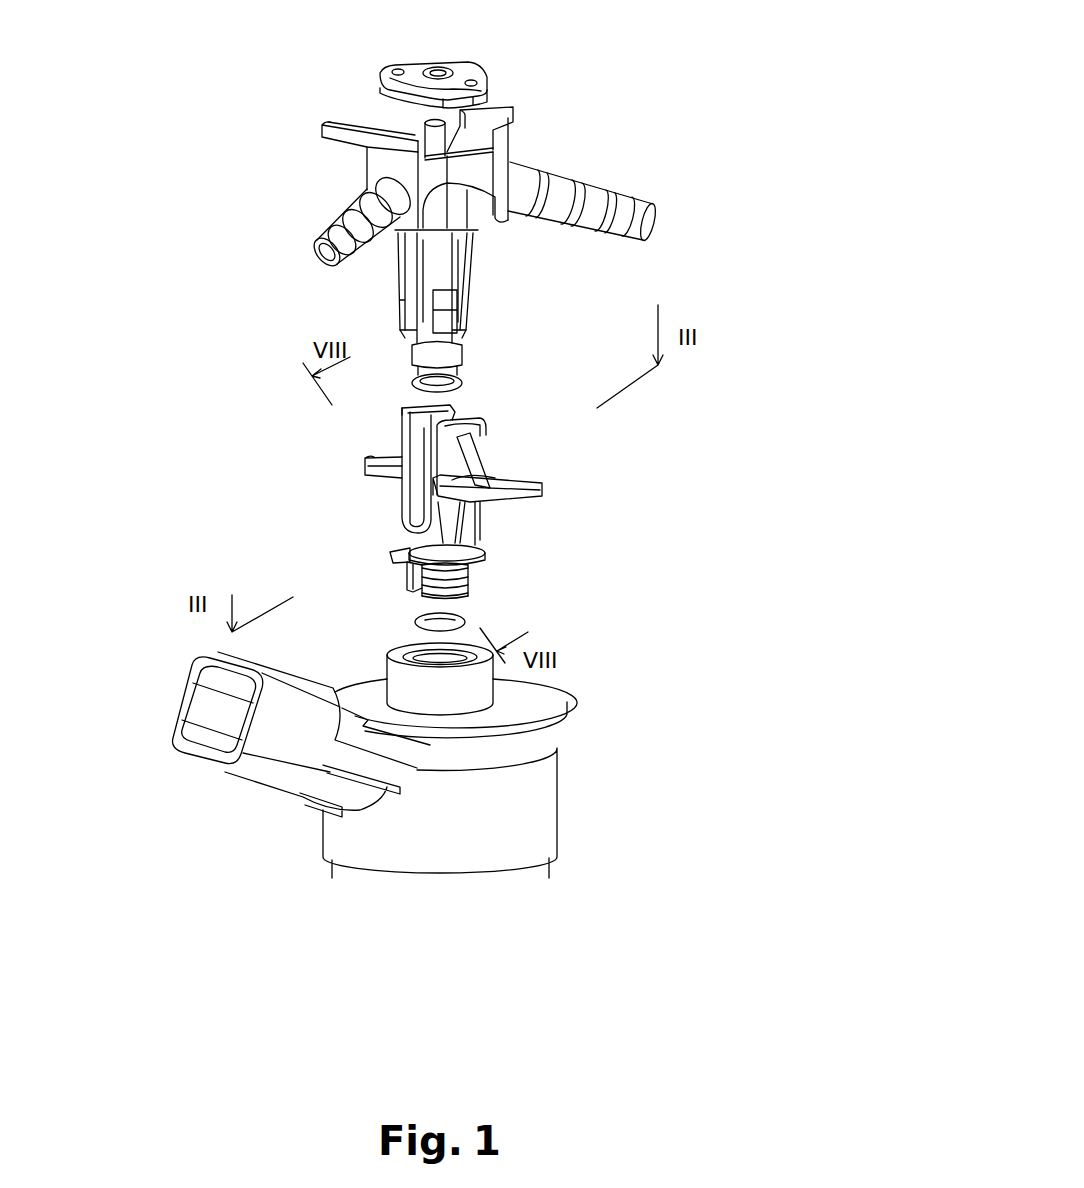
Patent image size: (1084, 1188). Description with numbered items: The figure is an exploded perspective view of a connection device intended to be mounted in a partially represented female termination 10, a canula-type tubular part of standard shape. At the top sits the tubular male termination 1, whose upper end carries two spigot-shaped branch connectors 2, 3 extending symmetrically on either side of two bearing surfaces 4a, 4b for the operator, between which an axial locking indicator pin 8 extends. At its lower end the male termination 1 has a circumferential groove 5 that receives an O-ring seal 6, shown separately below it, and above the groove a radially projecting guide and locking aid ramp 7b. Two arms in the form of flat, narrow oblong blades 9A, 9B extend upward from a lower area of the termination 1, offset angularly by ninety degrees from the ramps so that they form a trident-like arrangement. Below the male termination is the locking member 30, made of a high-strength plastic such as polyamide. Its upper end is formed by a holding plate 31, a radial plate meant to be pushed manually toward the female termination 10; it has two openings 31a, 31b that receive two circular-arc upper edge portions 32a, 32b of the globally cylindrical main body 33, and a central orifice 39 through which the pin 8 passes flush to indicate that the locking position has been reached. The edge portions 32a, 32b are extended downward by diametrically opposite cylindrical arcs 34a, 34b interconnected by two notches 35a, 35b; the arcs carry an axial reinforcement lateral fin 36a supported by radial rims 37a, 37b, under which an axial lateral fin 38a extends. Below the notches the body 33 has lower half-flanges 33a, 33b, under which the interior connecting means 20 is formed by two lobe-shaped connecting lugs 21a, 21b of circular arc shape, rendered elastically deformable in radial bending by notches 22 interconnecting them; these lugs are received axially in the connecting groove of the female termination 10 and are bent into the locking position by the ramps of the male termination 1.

The tubular male termination 1 is at (765, 95).
The branch connector 2 is at (314, 260).
The branch connector 3 is at (648, 206).
The bearing surface 4a is at (325, 124).
The bearing surface 4b is at (516, 114).
The circumferential groove 5 is at (459, 373).
The O-ring seal 6 is at (416, 622).
The ramp 7b is at (450, 325).
The axial locking indicator pin 8 is at (426, 126).
The arm (oblong blade) 9A is at (398, 274).
The arm (oblong blade) 9B is at (480, 258).
The tubular female termination 10 is at (662, 882).
The interior connecting means 20 is at (548, 566).
The connecting lug 21a is at (410, 576).
The connecting lug 21b is at (476, 584).
The notch 22 is at (416, 595).
The locking member 30 is at (752, 405).
The holding plate (holding means) 31 is at (434, 60).
The opening 31a is at (397, 67).
The opening 31b is at (476, 80).
The upper edge portion 32a is at (408, 407).
The upper edge portion 32b is at (488, 421).
The main body 33 is at (490, 521).
The lower half-flange 33a is at (395, 549).
The lower half-flange 33b is at (486, 556).
The cylindrical arc 34a is at (400, 424).
The cylindrical arc 34b is at (484, 441).
The notch 35a is at (402, 522).
The notch 35b is at (462, 414).
The axial reinforcement lateral fin 36a is at (492, 471).
The radial rim 37a is at (366, 462).
The radial rim 37b is at (544, 488).
The axial lateral fin 38a is at (470, 540).
The orifice 39 is at (456, 68).